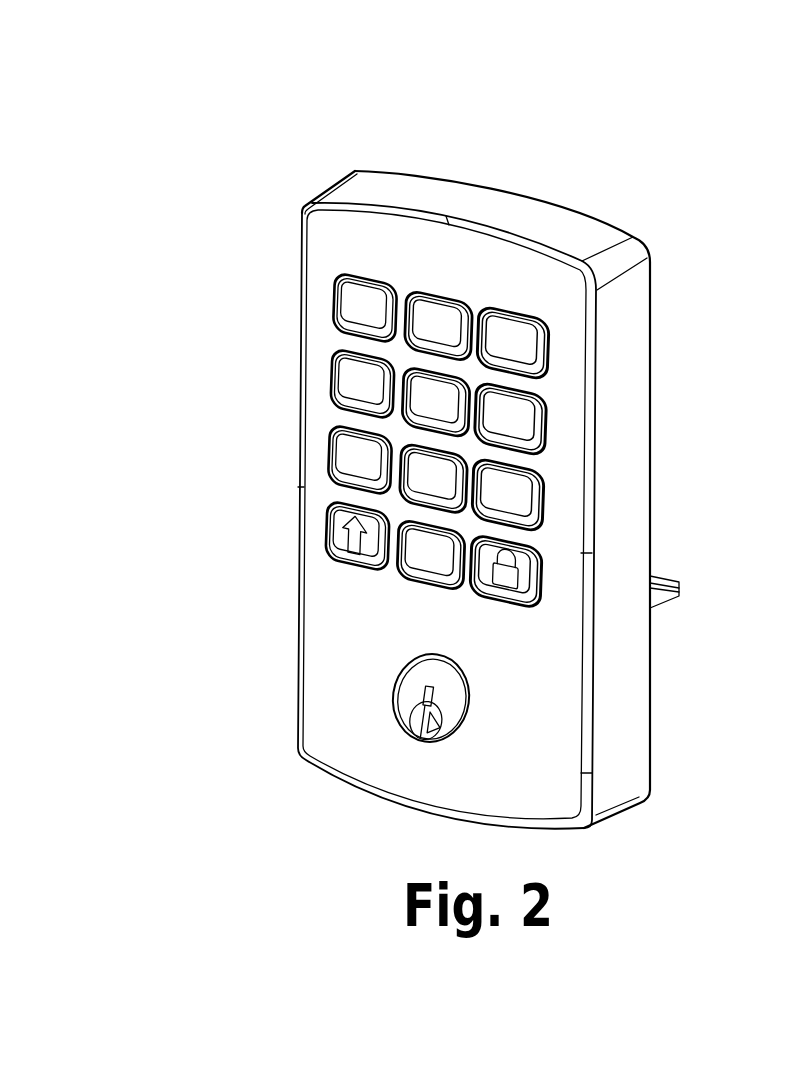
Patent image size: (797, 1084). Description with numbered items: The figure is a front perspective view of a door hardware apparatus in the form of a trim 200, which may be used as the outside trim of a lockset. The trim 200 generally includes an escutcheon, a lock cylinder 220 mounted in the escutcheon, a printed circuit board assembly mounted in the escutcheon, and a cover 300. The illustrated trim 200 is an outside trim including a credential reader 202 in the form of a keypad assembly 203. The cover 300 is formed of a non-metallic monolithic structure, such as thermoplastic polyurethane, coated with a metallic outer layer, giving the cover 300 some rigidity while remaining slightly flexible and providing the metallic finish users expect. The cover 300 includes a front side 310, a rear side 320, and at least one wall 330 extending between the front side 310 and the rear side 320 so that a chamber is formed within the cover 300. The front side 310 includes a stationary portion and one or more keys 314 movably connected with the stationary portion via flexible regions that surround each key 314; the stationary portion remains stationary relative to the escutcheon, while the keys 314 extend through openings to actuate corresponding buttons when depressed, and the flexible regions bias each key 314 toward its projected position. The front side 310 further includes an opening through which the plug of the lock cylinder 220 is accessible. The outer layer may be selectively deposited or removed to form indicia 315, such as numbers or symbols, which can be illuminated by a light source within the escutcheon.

The trim 200 is at (285, 112).
The credential reader 202 is at (226, 325).
The keypad assembly 203 is at (233, 397).
The lock cylinder 220 is at (345, 704).
The cover 300 is at (300, 272).
The front side 310 is at (338, 620).
The keys 314 is at (528, 352).
The indicia 315 is at (507, 430).
The rear side 320 is at (698, 438).
The wall 330 is at (617, 617).